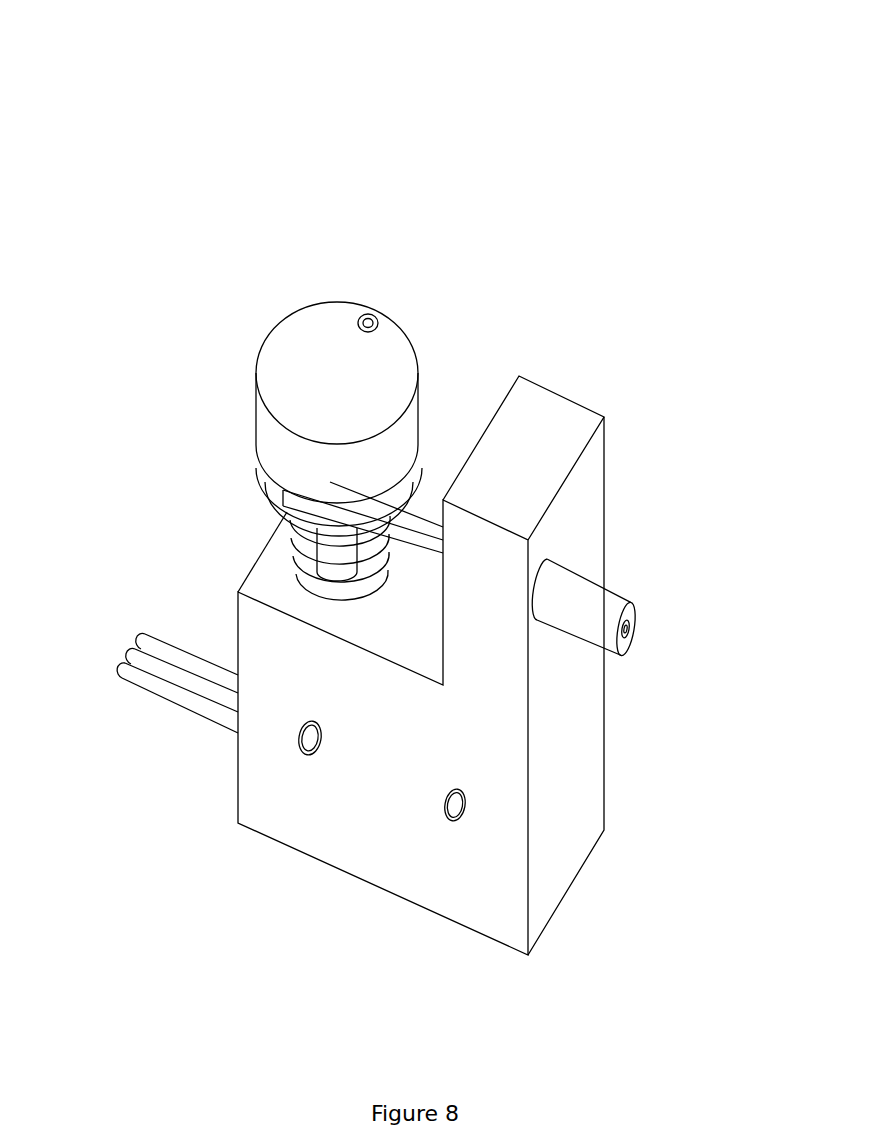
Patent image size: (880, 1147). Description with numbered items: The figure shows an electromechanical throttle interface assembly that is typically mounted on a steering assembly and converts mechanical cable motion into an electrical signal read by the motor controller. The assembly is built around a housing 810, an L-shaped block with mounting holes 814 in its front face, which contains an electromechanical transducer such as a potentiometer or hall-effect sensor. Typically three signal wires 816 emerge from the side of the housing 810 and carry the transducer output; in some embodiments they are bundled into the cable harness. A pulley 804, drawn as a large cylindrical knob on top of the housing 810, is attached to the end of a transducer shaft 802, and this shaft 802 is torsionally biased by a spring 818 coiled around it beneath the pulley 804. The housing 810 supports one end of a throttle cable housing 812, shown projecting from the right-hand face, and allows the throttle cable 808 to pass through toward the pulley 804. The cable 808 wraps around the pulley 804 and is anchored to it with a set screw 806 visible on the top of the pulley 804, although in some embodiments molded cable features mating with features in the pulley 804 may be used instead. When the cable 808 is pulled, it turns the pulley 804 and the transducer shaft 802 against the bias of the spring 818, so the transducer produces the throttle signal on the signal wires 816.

The transducer shaft 802 is at (325, 540).
The pulley 804 is at (316, 338).
The set screw 806 is at (368, 323).
The throttle cable 808 is at (410, 533).
The housing 810 is at (529, 465).
The throttle cable housing 812 is at (592, 608).
The mounting holes 814 is at (455, 805).
The signal wires 816 is at (183, 697).
The spring 818 is at (293, 560).